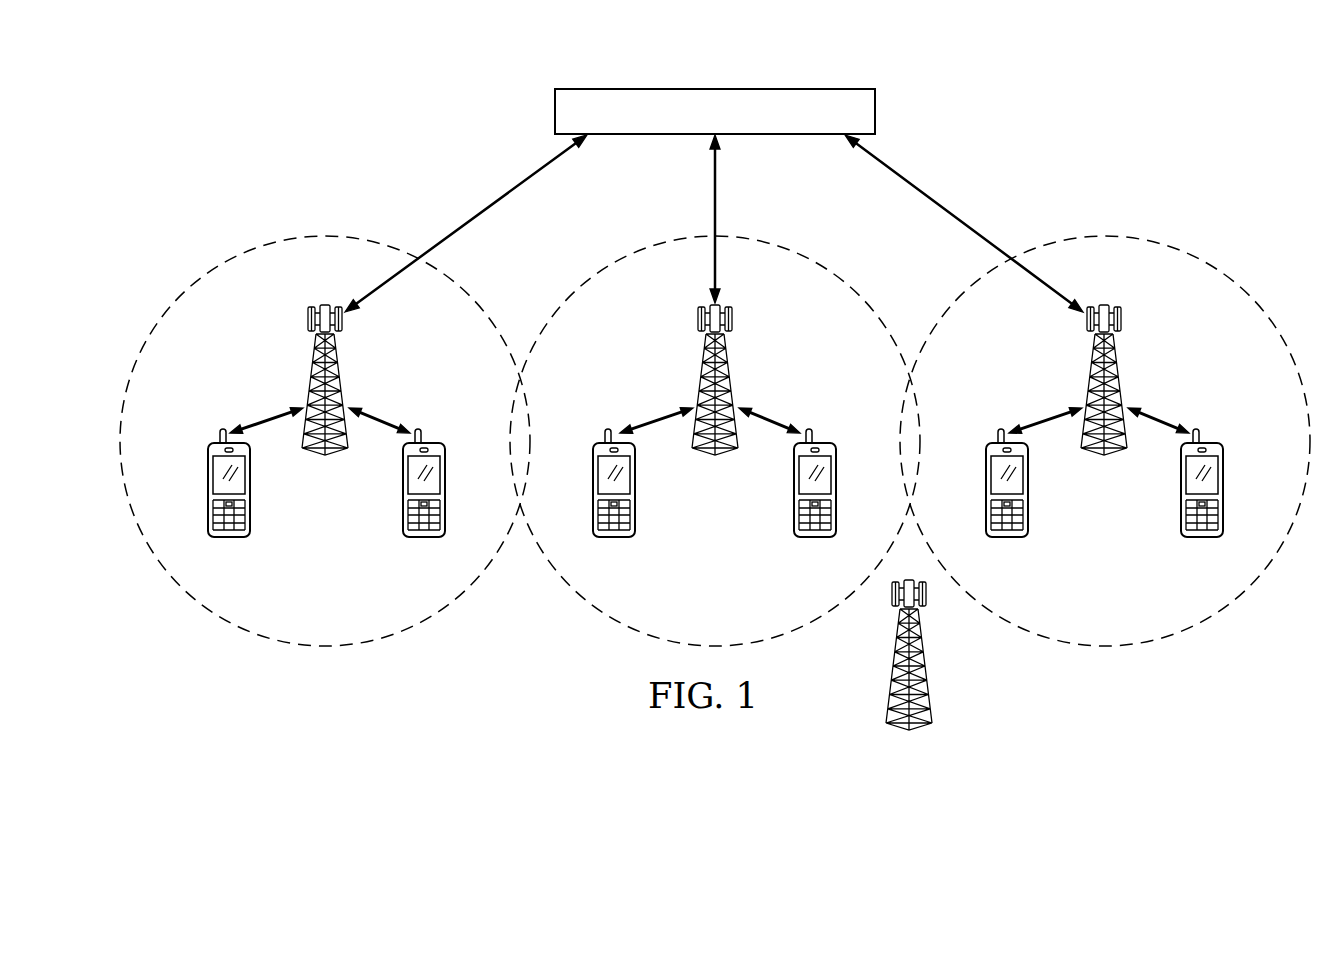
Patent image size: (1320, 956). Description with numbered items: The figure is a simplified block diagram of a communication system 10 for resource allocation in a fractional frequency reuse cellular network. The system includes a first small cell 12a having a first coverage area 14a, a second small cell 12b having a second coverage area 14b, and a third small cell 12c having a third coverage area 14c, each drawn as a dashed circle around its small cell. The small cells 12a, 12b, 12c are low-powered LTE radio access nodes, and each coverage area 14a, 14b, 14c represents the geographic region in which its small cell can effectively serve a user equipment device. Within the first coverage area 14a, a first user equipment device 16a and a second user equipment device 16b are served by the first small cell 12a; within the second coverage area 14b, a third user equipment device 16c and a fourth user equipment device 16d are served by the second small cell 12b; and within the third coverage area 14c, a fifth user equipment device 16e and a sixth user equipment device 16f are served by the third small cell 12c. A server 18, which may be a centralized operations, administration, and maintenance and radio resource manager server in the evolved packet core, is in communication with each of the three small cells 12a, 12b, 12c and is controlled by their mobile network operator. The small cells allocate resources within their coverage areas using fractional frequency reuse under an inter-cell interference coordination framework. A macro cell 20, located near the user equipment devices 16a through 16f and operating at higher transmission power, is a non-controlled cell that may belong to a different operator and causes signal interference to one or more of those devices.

The communication system 10 is at (980, 114).
The first small cell 12a is at (313, 357).
The second small cell 12b is at (703, 357).
The third small cell 12c is at (1116, 357).
The first coverage area 14a is at (282, 240).
The second coverage area 14b is at (672, 240).
The third coverage area 14c is at (1145, 238).
The first user equipment device 16a is at (229, 537).
The second user equipment device 16b is at (424, 537).
The third user equipment device 16c is at (614, 537).
The fourth user equipment device 16d is at (815, 537).
The fifth user equipment device 16e is at (1007, 537).
The sixth user equipment device 16f is at (1202, 537).
The server 18 is at (555, 110).
The macro cell 20 is at (920, 724).